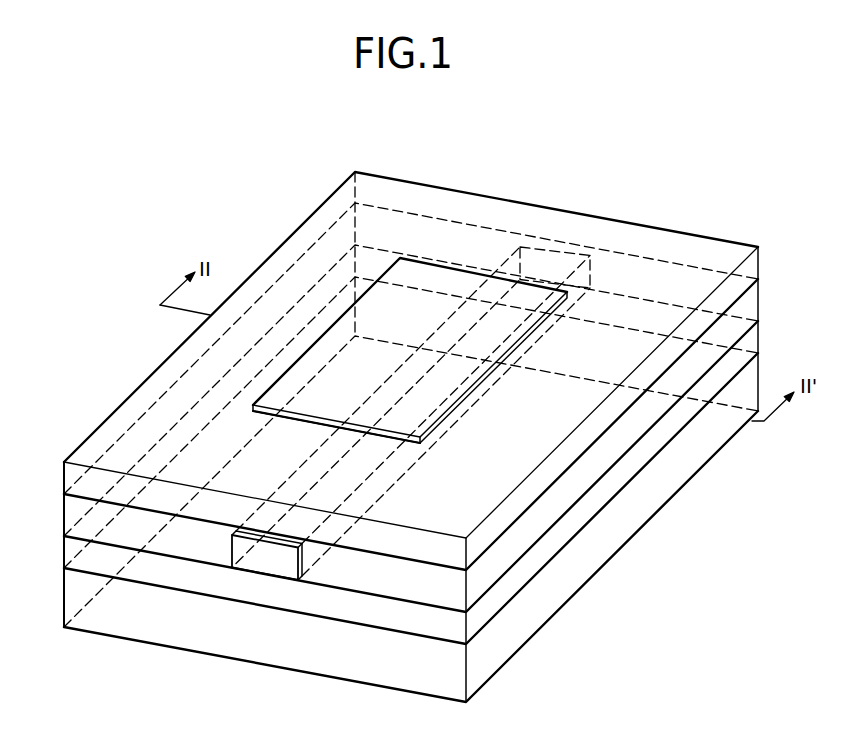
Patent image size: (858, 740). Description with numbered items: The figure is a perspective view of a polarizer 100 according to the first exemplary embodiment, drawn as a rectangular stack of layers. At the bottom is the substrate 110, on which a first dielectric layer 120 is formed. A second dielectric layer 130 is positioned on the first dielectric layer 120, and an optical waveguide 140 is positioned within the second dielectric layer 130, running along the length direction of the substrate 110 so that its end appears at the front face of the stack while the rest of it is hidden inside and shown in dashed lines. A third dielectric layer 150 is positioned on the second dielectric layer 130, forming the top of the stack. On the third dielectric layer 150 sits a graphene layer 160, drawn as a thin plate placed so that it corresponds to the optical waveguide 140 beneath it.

The polarizer 100 is at (590, 190).
The substrate 110 is at (525, 612).
The first dielectric layer 120 is at (543, 547).
The second dielectric layer 130 is at (573, 478).
The optical waveguide 140 is at (258, 563).
The third dielectric layer 150 is at (587, 430).
The graphene layer 160 is at (400, 313).